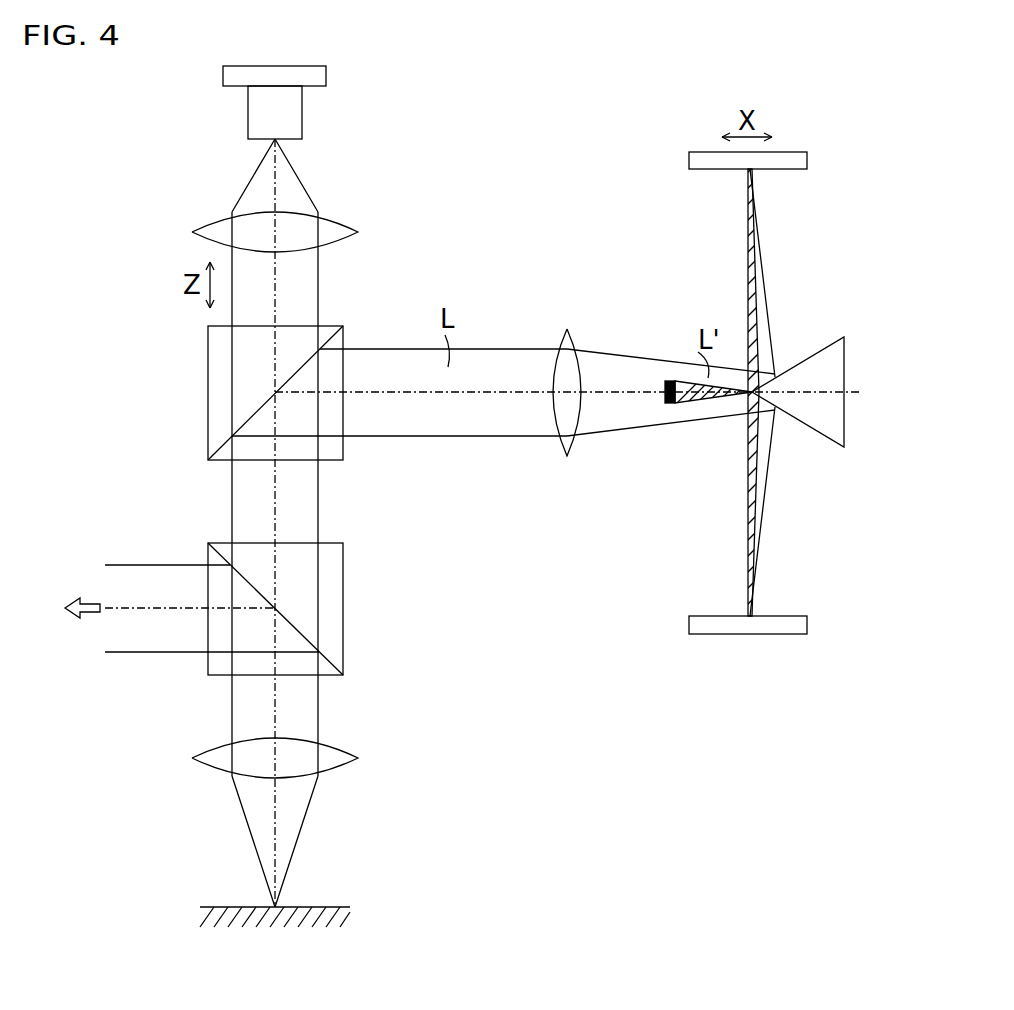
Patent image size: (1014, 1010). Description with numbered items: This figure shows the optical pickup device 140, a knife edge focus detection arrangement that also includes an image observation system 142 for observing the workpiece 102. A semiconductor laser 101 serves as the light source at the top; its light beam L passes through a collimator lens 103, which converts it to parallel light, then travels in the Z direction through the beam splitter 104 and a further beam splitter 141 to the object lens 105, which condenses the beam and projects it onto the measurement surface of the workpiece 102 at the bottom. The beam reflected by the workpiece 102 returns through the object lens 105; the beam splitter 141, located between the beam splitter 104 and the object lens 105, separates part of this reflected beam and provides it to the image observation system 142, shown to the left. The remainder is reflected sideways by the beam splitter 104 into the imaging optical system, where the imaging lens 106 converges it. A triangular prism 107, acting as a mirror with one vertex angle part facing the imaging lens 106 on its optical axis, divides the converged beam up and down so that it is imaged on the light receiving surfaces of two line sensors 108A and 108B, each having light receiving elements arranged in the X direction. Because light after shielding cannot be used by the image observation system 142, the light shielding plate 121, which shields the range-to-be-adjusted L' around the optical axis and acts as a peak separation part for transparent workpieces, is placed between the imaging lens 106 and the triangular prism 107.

The semiconductor laser 101 is at (326, 76).
The workpiece 102 is at (350, 917).
The collimator lens 103 is at (358, 232).
The beam splitter 104 is at (208, 394).
The object lens 105 is at (358, 758).
The imaging lens 106 is at (566, 330).
The triangular prism 107 is at (844, 386).
The line sensor 108A is at (807, 160).
The line sensor 108B is at (807, 625).
The light shielding plate 121 is at (668, 405).
The optical pickup device 140 is at (490, 125).
The beam splitter 141 is at (343, 612).
The image observation system 142 is at (60, 608).